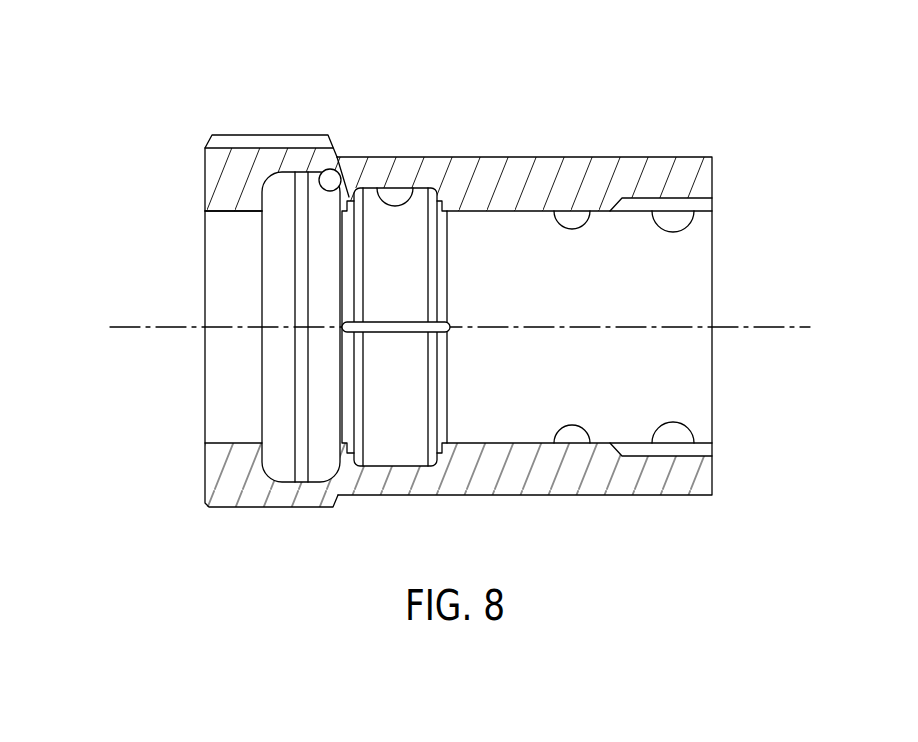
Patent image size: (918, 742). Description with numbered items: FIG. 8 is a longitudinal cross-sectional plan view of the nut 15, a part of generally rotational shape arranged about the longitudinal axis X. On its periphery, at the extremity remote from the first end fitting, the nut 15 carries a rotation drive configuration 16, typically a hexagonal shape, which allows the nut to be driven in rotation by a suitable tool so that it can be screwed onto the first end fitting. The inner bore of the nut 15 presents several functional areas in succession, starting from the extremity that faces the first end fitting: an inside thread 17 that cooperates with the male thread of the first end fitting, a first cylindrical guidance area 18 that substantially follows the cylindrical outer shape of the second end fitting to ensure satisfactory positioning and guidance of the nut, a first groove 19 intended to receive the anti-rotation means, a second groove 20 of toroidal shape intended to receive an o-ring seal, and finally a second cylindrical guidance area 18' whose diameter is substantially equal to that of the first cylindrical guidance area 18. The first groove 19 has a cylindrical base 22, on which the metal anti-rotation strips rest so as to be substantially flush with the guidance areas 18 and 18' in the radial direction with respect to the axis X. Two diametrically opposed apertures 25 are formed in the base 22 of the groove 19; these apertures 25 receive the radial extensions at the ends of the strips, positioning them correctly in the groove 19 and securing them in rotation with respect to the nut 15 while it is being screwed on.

The nut 15 is at (545, 185).
The rotation drive configuration 16 is at (248, 135).
The inside thread 17 is at (688, 232).
The first cylindrical guidance area 18 is at (599, 266).
The second cylindrical guidance area 18' is at (158, 247).
The first groove 19 is at (402, 188).
The second groove 20 is at (333, 172).
The cylindrical base 22 is at (410, 273).
The apertures 25 is at (400, 334).
The longitudinal axis X is at (797, 325).